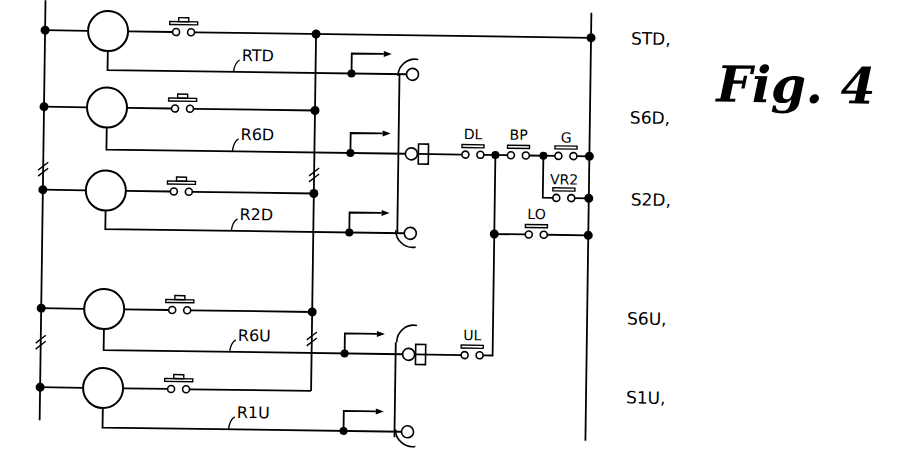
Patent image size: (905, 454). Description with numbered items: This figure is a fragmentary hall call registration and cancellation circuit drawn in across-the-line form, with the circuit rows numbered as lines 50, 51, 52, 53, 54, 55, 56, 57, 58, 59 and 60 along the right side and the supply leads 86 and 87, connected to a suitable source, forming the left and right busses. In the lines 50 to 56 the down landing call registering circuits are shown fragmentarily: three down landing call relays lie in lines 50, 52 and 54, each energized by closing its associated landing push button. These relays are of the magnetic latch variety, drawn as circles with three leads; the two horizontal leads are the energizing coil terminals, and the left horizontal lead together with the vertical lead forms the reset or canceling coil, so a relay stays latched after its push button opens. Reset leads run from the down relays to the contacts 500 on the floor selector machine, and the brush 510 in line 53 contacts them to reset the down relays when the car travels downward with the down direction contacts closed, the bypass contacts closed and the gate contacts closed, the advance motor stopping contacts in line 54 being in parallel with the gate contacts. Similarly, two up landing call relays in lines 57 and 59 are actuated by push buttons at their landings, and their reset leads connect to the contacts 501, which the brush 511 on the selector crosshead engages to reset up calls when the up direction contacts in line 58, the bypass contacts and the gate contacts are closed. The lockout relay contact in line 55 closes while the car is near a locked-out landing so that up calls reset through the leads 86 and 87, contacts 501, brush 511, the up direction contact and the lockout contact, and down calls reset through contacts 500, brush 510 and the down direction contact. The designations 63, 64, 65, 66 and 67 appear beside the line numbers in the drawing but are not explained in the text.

The line 50 is at (590, 34).
The line 51 is at (590, 74).
The line 52 is at (590, 113).
The line 53 is at (590, 153).
The line 54 is at (590, 194).
The line 55 is at (590, 232).
The line 56 is at (590, 273).
The line 57 is at (590, 314).
The line 58 is at (590, 353).
The line 59 is at (590, 393).
The line 60 is at (590, 431).
The conductor 63 (S6U relay circuit) 63 is at (365, 307).
The conductor 64 (S1U relay circuit) 64 is at (364, 386).
The conductor 65 (STD relay circuit) 65 is at (369, 29).
The conductor 66 (S6D relay circuit) 66 is at (368, 105).
The conductor 67 (S2D relay circuit) 67 is at (369, 188).
The lead 86 is at (44, 89).
The lead 87 is at (590, 96).
The contacts 500 is at (399, 183).
The contacts 501 is at (399, 380).
The brush 510 is at (425, 163).
The brush 511 is at (425, 363).